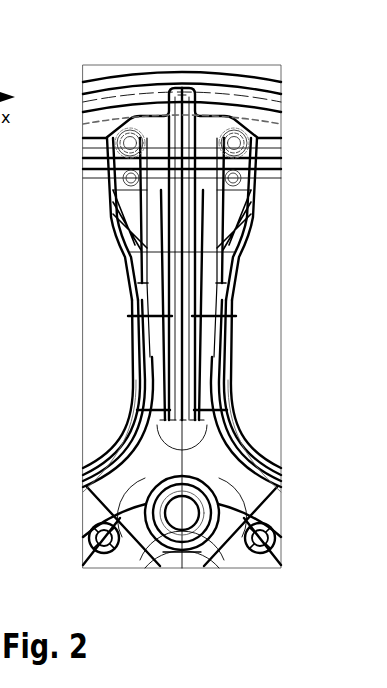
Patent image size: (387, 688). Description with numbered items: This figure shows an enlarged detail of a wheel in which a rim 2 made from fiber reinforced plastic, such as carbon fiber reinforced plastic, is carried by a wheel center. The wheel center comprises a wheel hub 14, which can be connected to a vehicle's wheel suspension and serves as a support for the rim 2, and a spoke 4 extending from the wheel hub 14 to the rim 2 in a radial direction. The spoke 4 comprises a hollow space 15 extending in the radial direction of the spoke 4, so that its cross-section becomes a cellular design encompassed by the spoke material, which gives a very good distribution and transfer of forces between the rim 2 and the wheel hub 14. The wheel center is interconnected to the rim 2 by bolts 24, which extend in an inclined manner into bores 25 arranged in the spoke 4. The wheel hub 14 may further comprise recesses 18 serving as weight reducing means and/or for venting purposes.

The rim 2 is at (110, 87).
The spoke 4 is at (110, 234).
The wheel hub 14 is at (119, 433).
The hollow space 15 is at (158, 243).
The recess 18 is at (160, 498).
The bolt 24 is at (116, 141).
The bore 25 is at (120, 180).